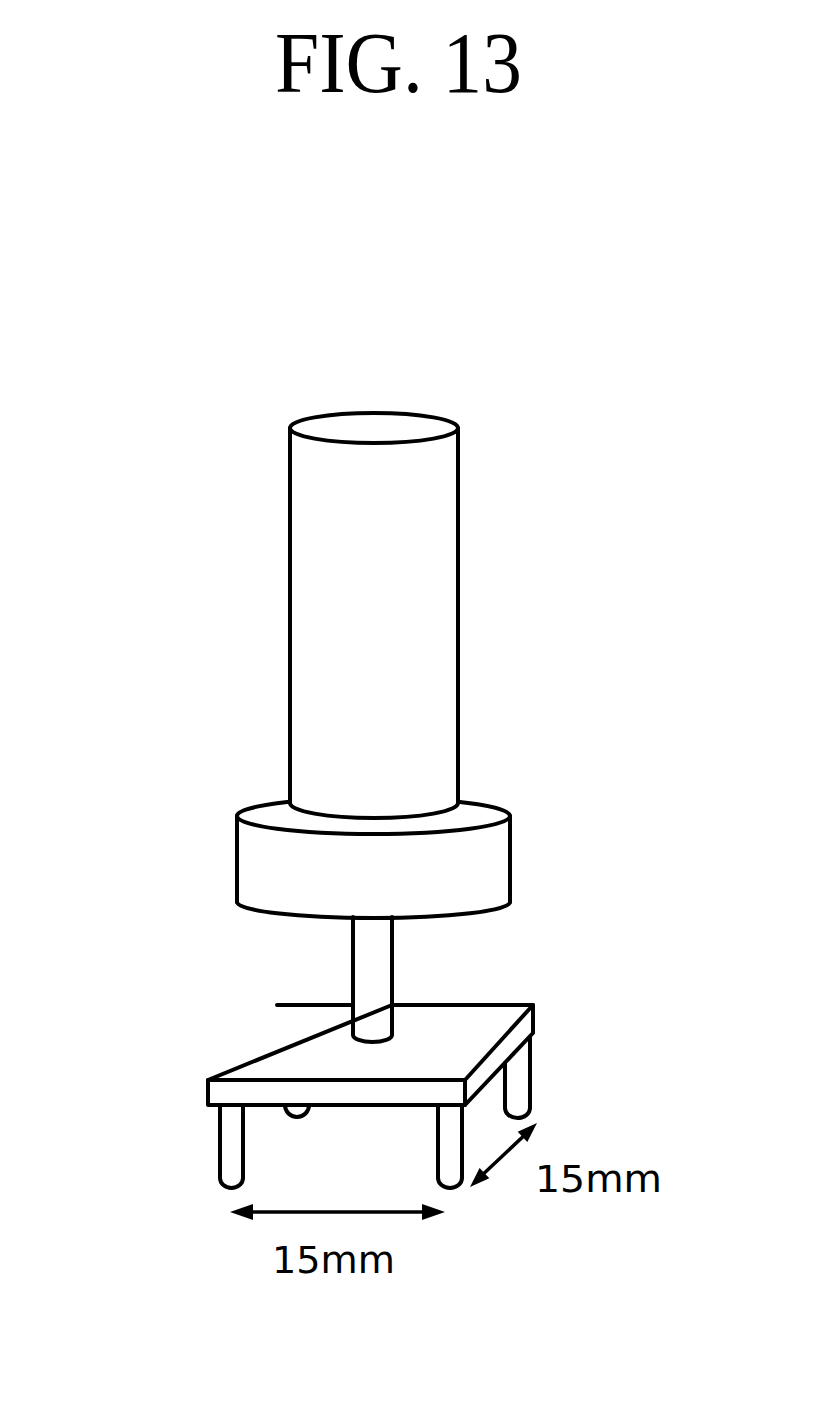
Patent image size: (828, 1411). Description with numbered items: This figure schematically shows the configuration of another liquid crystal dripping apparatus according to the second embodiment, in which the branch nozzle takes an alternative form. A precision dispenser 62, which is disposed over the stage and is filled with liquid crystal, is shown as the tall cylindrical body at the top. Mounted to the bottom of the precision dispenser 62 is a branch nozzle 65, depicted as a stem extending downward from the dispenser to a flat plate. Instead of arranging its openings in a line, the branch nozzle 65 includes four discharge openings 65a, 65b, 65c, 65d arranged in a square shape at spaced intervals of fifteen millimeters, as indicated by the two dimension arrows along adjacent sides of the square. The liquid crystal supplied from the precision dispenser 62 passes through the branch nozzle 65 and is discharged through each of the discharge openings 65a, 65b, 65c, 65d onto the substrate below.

The precision dispenser 62 is at (378, 427).
The branch nozzle 65 is at (392, 960).
The discharge opening 65a is at (297, 1115).
The discharge opening 65b is at (218, 1143).
The discharge opening 65c is at (452, 1190).
The discharge opening 65d is at (530, 1053).